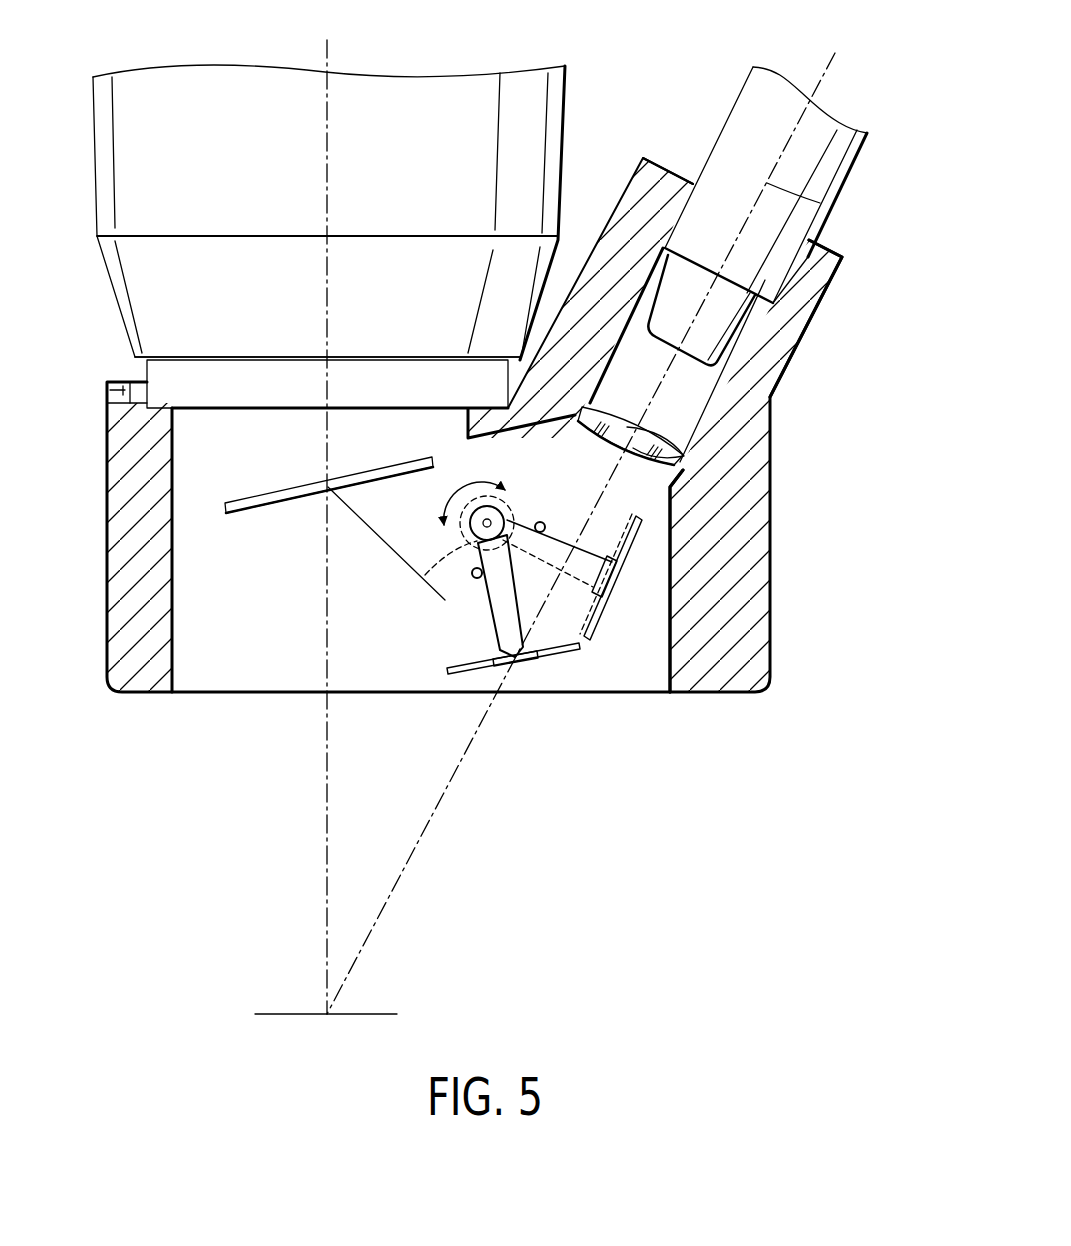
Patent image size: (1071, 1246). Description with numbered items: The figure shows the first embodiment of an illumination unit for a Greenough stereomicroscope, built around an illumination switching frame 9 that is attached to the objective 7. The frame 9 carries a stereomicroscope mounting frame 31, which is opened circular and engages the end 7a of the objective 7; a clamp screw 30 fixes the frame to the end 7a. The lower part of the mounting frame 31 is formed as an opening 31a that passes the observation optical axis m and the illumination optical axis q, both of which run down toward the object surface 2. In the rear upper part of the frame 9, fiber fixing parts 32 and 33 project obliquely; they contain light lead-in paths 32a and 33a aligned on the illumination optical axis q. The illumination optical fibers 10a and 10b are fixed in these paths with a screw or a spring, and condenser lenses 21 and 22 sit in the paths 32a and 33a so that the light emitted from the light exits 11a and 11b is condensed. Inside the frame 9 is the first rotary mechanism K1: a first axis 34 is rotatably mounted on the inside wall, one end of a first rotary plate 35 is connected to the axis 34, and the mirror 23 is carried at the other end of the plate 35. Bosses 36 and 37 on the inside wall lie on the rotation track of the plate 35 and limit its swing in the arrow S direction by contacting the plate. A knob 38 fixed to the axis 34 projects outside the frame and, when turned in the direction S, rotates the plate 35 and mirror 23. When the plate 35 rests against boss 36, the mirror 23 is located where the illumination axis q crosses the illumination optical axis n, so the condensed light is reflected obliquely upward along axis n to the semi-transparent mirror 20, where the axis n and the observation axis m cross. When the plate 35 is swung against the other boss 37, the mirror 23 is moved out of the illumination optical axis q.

The object surface / specimen plane 2 is at (363, 1013).
The objective 7 is at (108, 172).
The end of the objective 7a is at (187, 373).
The illumination switching frame 9 is at (117, 647).
The illumination optical fiber 10a is at (802, 185).
The illumination optical fiber 10b is at (853, 163).
The light exit 11a is at (764, 296).
The light exit 11b is at (692, 368).
The semi-transparent mirror 20 is at (250, 513).
The condenser lens 21 is at (771, 560).
The condenser lens 22 is at (658, 430).
The mirror 23 is at (557, 662).
The clamp screw 30 is at (127, 393).
The stereomicroscope mounting frame 31 is at (493, 388).
The opening 31a is at (178, 642).
The fiber fixing part 32 is at (775, 310).
The fiber fixing part 33 is at (793, 273).
The light lead-in path 32a is at (735, 439).
The light lead-in path 33a is at (690, 400).
The first axis 34 is at (493, 520).
The first rotary plate 35 is at (502, 620).
The boss 36 is at (473, 577).
The boss 37 is at (541, 522).
The knob 38 is at (425, 578).
The arrow S direction S is at (474, 495).
The first rotary mechanism K1 is at (593, 655).
The observation optical axis m is at (327, 797).
The illumination optical axis n is at (362, 512).
The illumination optical axis q is at (807, 197).